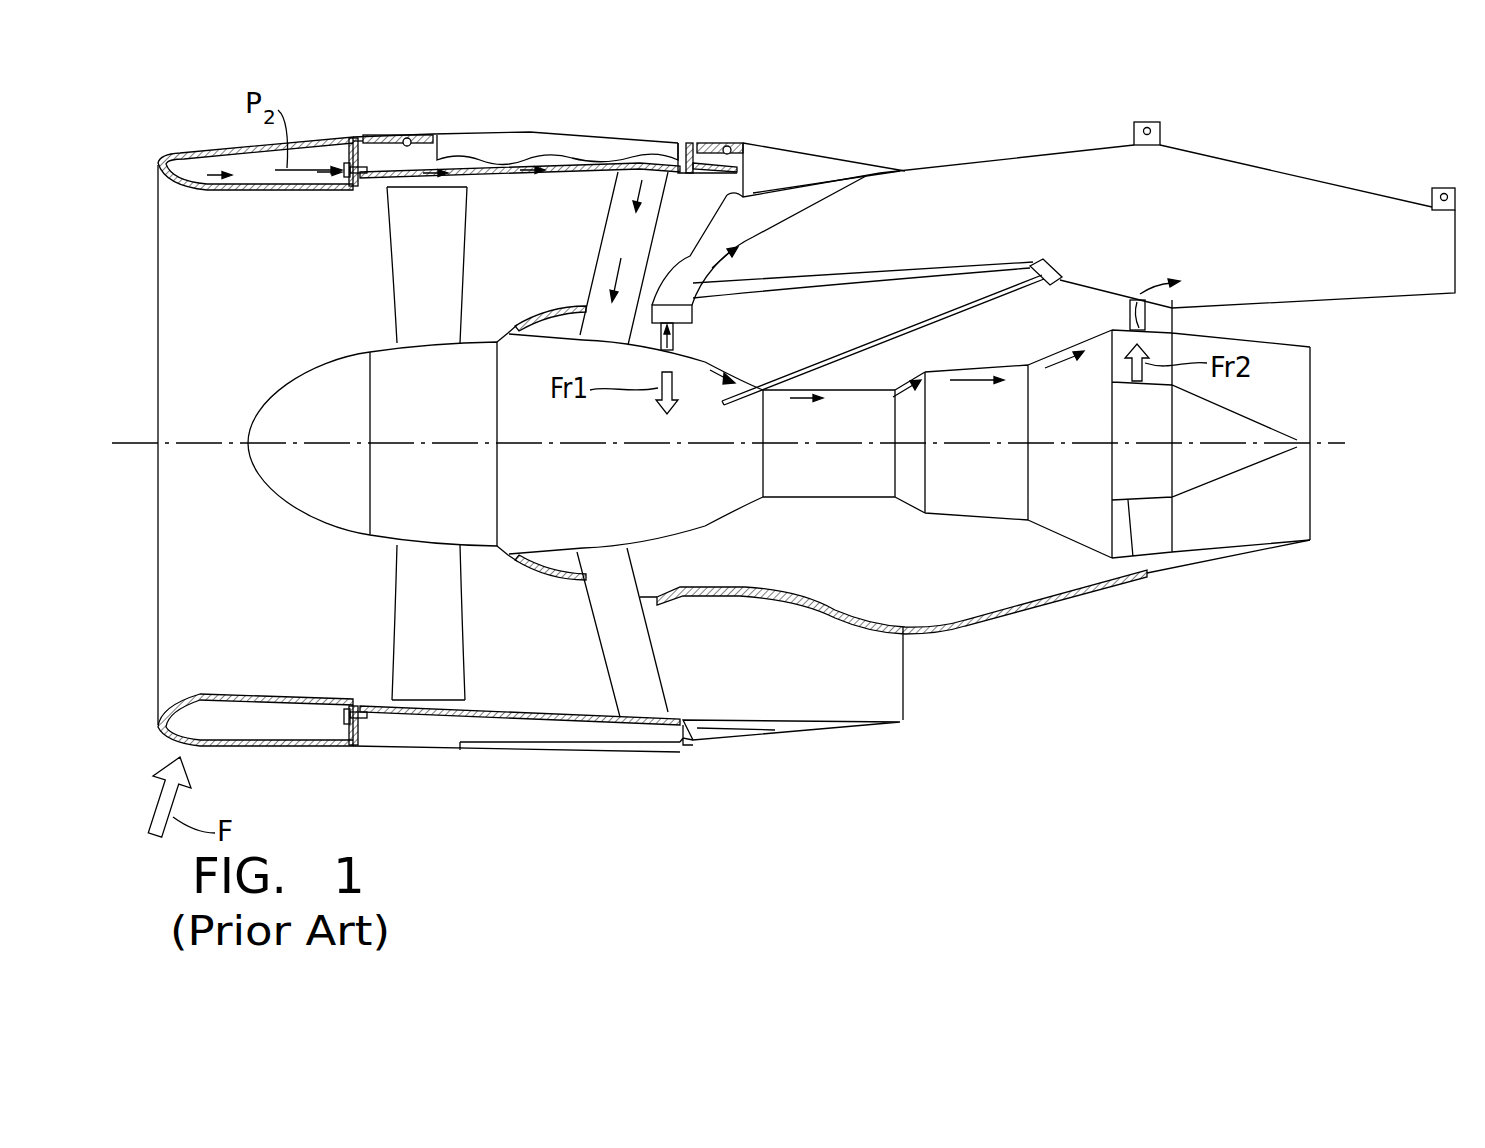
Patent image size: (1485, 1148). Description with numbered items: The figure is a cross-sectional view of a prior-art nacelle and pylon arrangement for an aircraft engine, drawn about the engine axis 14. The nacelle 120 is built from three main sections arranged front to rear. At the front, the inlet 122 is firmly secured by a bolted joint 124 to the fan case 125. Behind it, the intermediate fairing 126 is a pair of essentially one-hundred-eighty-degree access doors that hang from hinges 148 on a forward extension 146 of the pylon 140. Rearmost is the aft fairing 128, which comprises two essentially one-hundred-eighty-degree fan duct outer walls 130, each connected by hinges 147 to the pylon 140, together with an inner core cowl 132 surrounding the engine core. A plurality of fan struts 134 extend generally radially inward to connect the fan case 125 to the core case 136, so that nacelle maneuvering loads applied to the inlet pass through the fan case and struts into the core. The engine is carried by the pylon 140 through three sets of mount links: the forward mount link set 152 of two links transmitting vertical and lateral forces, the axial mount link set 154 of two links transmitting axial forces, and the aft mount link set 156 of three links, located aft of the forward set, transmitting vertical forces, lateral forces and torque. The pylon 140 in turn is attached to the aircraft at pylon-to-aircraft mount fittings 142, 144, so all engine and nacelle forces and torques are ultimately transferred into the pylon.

The engine centerline axis 14 is at (178, 443).
The nacelle 120 is at (713, 825).
The inlet 122 is at (187, 693).
The bolted joint 124 is at (340, 718).
The fan case 125 is at (543, 722).
The intermediate fairing 126 is at (440, 753).
The aft fairing 128 is at (906, 727).
The fan duct outer walls 130 is at (783, 160).
The inner core cowl 132 is at (790, 607).
The fan struts 134 is at (602, 253).
The core case 136 is at (733, 518).
The pylon 140 is at (1369, 264).
The pylon-to-aircraft mount fitting 142 is at (1132, 122).
The pylon-to-aircraft mount fitting 144 is at (1431, 188).
The forward extension of the pylon 146 is at (682, 142).
The hinges 147 is at (721, 142).
The hinges 148 is at (396, 137).
The forward mount link set 152 is at (676, 340).
The axial mount link set 154 is at (892, 337).
The aft mount link set 156 is at (1128, 315).